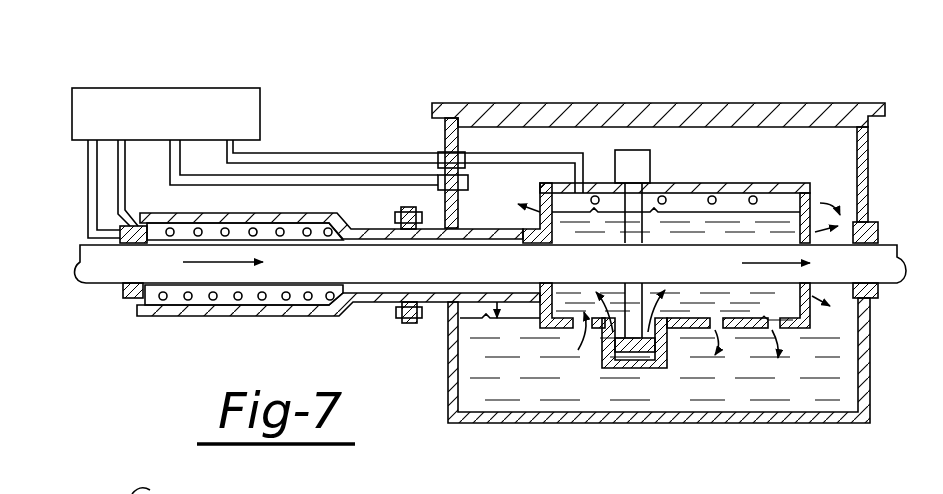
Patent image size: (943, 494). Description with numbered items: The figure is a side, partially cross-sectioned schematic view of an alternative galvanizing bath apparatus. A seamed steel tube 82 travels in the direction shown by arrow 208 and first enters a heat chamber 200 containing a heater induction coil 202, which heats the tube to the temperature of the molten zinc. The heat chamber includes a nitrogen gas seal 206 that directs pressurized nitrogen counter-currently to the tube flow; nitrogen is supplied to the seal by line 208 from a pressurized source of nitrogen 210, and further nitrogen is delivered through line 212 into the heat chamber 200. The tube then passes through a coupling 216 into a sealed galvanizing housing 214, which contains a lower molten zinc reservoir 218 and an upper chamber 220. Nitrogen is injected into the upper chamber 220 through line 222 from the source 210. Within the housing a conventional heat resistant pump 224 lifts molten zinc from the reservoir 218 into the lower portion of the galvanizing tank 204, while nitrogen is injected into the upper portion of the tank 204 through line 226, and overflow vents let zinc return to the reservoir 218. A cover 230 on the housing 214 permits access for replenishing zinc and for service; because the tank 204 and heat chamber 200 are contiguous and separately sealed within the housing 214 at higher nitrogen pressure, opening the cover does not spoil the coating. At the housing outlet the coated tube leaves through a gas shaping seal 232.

The seamed steel tube 82 is at (108, 265).
The heat chamber 200 is at (306, 218).
The heater induction coil 202 is at (285, 300).
The galvanizing tank 204 is at (760, 186).
The nitrogen gas seal 206 is at (125, 293).
The nitrogen supply line 208 is at (90, 156).
The source of nitrogen 210 is at (127, 88).
The nitrogen line to heat chamber 212 is at (122, 180).
The sealed galvanizing housing 214 is at (577, 415).
The coupling 216 is at (409, 325).
The molten zinc reservoir 218 is at (803, 385).
The upper chamber 220 is at (818, 143).
The nitrogen line to upper chamber 222 is at (320, 177).
The heat resistant pump 224 is at (652, 177).
The nitrogen line to galvanizing tank 226 is at (519, 160).
The cover 230 is at (465, 114).
The gas shaping seal 232 is at (857, 228).